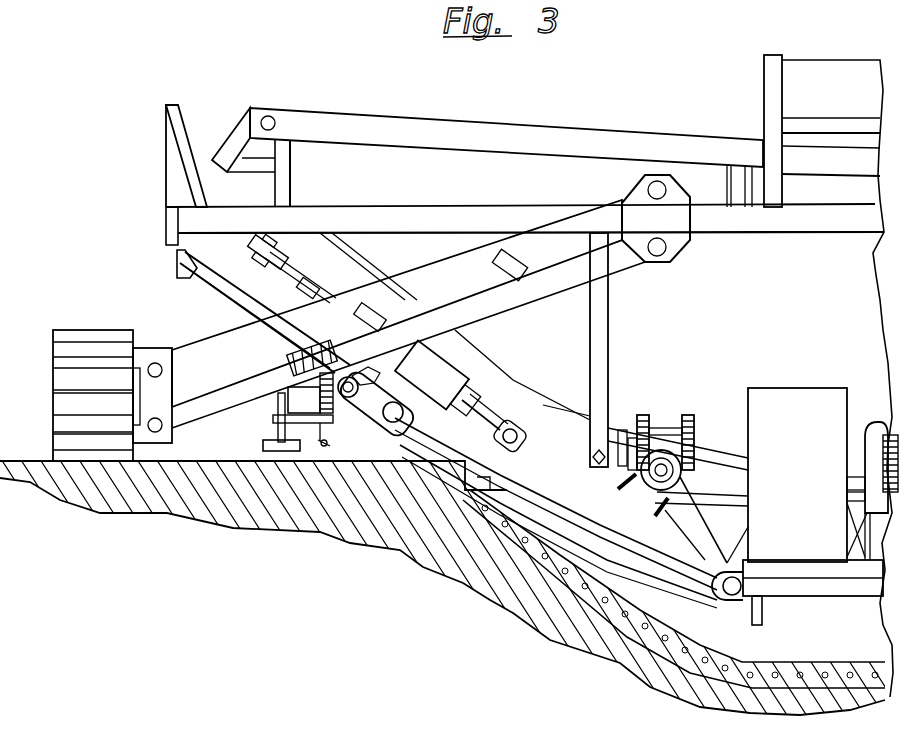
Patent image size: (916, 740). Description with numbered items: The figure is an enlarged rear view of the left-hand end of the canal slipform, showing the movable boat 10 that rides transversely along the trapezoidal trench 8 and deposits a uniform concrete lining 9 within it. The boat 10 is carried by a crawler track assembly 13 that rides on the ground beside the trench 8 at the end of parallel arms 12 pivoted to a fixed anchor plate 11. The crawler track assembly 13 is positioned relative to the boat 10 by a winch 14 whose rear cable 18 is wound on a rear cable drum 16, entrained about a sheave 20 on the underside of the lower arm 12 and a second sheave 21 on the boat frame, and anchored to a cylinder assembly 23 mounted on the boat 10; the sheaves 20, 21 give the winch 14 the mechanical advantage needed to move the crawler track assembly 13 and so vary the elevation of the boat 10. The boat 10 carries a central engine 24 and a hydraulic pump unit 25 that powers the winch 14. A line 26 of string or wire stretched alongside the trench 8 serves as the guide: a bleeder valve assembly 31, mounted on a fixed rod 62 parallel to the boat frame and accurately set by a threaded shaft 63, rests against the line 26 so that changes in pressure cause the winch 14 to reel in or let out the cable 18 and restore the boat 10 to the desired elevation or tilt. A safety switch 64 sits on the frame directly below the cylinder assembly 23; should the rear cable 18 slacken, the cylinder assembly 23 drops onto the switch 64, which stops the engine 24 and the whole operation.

The trapezoidal trench 8 is at (567, 566).
The concrete lining 9 is at (600, 559).
The movable boat 10 is at (500, 362).
The fixed anchor plates 11 is at (667, 229).
The parallel arms 12 is at (509, 246).
The crawler track assemblies 13 is at (106, 338).
The winch 14 is at (666, 428).
The rear cable drum 16 is at (683, 470).
The rear cable 18 is at (596, 528).
The sheave 20 is at (378, 414).
The second sheave 21 is at (735, 600).
The cylinder assembly 23 is at (448, 375).
The central engine 24 is at (877, 422).
The hydraulic pump unit 25 is at (812, 422).
The line 26 is at (332, 445).
The bleeder valve assembly 31 is at (275, 443).
The fixed rod 62 is at (210, 293).
The threaded shaft 63 is at (322, 402).
The switch 64 is at (355, 378).